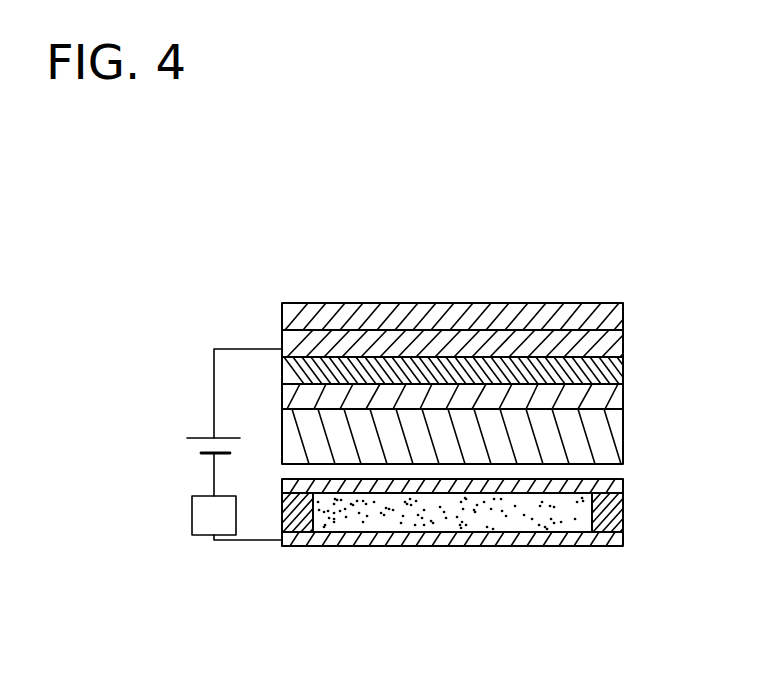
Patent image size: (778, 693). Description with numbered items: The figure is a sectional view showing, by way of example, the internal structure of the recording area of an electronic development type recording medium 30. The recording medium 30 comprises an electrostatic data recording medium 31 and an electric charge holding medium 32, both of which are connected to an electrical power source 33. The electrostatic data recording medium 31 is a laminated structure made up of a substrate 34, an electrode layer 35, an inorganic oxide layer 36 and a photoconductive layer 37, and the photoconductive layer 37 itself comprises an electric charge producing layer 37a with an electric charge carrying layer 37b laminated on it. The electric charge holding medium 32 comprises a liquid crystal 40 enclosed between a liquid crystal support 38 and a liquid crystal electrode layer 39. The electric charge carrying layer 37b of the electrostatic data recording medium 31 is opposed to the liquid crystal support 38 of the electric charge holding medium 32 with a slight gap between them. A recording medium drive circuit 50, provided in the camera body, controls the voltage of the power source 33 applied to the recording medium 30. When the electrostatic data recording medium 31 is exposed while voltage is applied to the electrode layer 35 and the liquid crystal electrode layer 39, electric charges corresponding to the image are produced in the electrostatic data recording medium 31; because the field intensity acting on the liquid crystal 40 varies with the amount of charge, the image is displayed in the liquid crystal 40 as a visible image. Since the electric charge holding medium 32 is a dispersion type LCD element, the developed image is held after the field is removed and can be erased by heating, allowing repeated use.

The electronic development type recording medium 30 is at (198, 561).
The electrostatic data recording medium 31 is at (299, 305).
The electric charge holding medium 32 is at (293, 549).
The electrical power source 33 is at (207, 458).
The substrate 34 is at (574, 303).
The electrode layer 35 is at (427, 348).
The inorganic oxide layer 36 is at (623, 360).
The photoconductive layer 37 is at (638, 382).
The electric charge producing layer 37a is at (623, 382).
The electric charge carrying layer 37b is at (604, 443).
The liquid crystal support 38 is at (404, 486).
The liquid crystal electrode layer 39 is at (565, 538).
The liquid crystal 40 is at (489, 520).
The recording medium drive circuit 50 is at (200, 522).